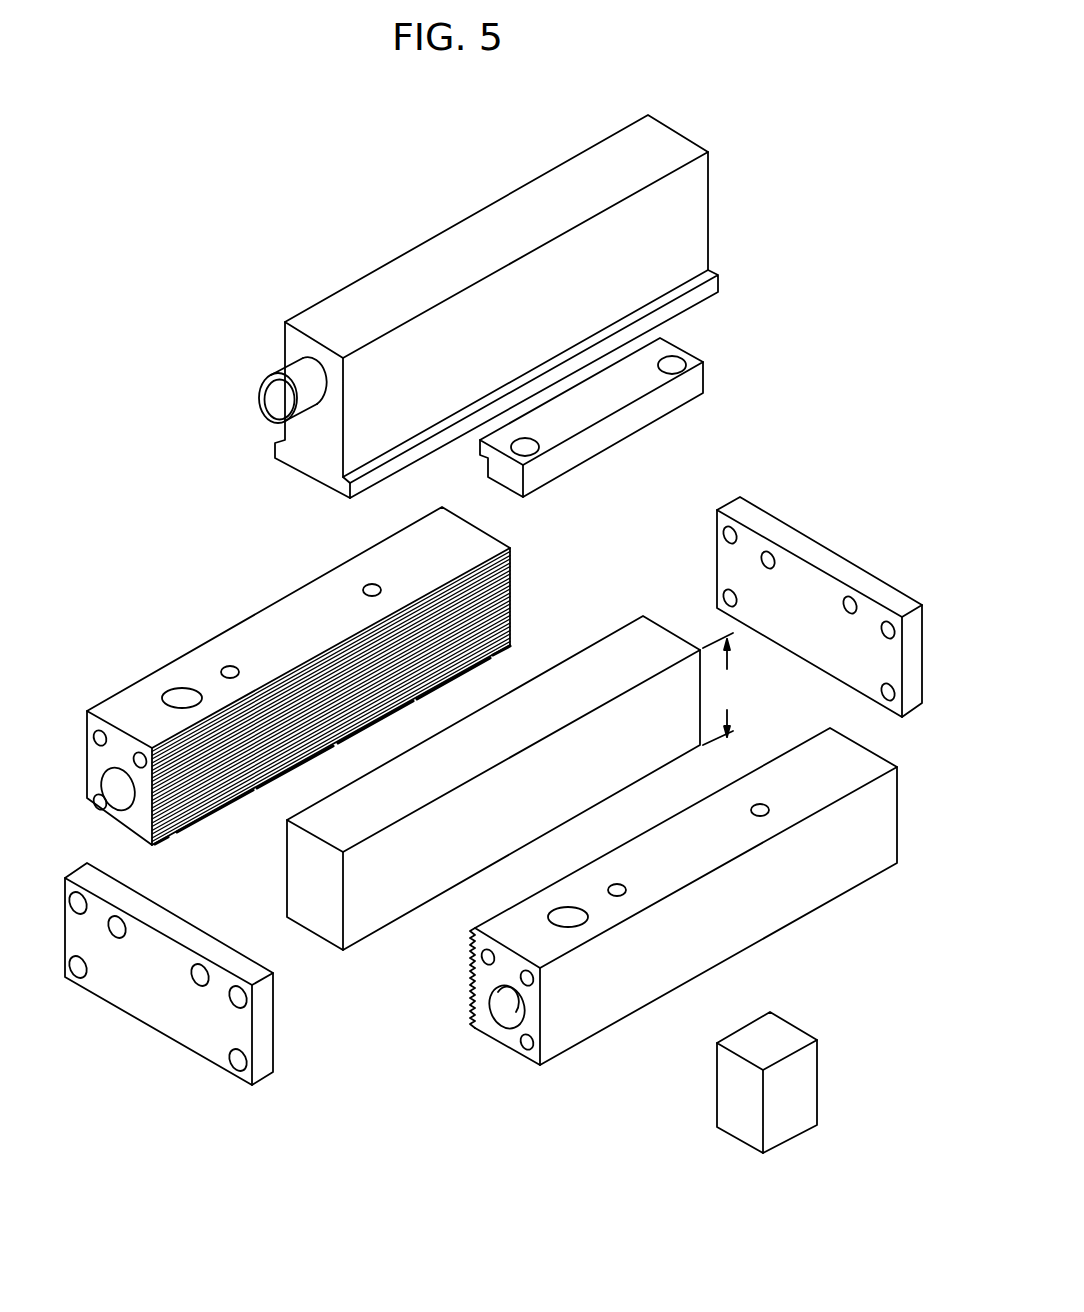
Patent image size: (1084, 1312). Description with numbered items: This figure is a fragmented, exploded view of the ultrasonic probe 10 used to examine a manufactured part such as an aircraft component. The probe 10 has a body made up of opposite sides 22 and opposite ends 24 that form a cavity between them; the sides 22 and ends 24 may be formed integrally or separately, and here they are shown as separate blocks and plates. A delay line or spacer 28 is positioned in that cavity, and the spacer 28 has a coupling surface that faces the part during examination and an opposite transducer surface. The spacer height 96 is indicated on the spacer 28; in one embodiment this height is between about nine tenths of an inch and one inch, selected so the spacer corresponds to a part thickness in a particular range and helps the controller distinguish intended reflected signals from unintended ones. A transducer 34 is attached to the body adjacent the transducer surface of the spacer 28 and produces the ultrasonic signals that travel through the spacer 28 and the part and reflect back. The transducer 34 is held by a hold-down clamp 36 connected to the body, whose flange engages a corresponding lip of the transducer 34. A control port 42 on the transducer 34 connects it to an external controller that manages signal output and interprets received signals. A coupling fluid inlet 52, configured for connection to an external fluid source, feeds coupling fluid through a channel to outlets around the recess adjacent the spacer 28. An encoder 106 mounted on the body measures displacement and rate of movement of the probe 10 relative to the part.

The ultrasonic probe 10 is at (813, 189).
The transducer 34 is at (283, 343).
The control port 42 is at (273, 370).
The hold-down clamp 36 is at (667, 412).
The opposite ends 24 is at (876, 577).
The coupling fluid inlet 52 is at (178, 690).
The spacer 28 is at (383, 929).
The height 96 is at (723, 689).
The opposite sides 22 is at (900, 815).
The encoder 106 is at (803, 1130).